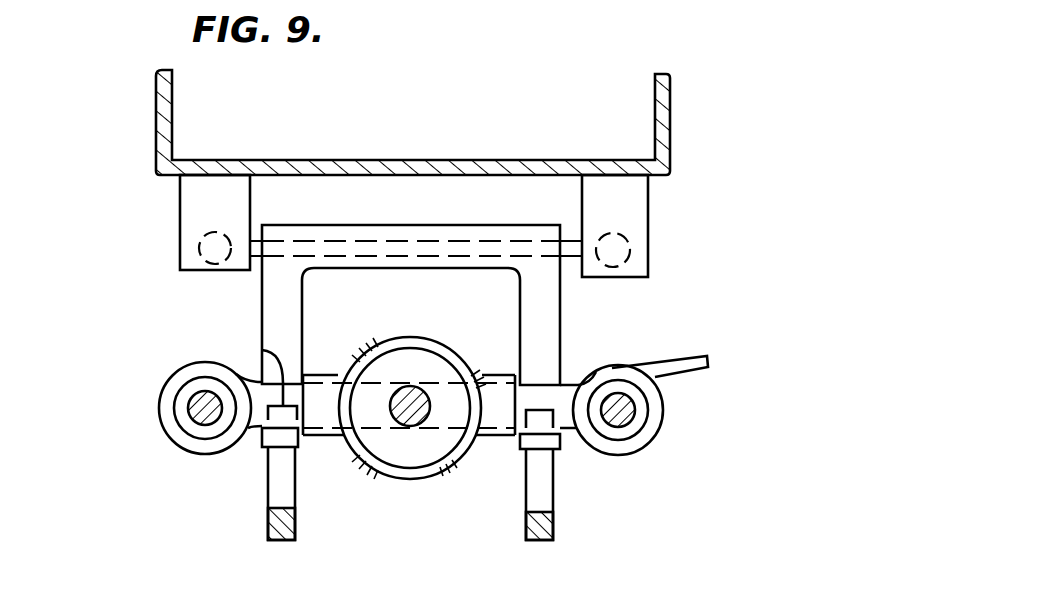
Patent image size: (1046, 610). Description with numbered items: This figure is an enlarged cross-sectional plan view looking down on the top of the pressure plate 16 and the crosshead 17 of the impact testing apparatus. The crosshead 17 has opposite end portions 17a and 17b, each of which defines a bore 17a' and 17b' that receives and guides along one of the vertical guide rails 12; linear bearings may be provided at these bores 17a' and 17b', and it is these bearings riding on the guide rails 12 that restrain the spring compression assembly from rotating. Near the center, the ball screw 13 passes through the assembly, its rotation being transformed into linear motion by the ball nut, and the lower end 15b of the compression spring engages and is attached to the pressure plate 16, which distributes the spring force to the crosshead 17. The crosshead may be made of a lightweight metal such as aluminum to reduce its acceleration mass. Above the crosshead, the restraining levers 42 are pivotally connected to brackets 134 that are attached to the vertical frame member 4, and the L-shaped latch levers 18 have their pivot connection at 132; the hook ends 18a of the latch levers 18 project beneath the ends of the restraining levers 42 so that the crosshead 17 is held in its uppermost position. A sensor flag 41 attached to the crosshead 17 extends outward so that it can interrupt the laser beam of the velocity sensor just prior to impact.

The vertical member 4 is at (492, 160).
The pivot connection 132 is at (342, 243).
The brackets 134 is at (178, 215).
The restraining levers 42 is at (262, 306).
The pressure plate 16 is at (389, 363).
The ball screw 13 is at (410, 388).
The lower end of compression spring 15b is at (370, 470).
The crosshead 17 is at (502, 442).
The end portion of crosshead 17a is at (141, 408).
The bore 17a' is at (143, 434).
The end portion of crosshead 17b is at (675, 410).
The bore 17b' is at (689, 429).
The guide rails 12 is at (190, 410).
The latch lever 18 is at (258, 513).
The hook ends 18a is at (262, 350).
The sensor flag 41 is at (693, 358).